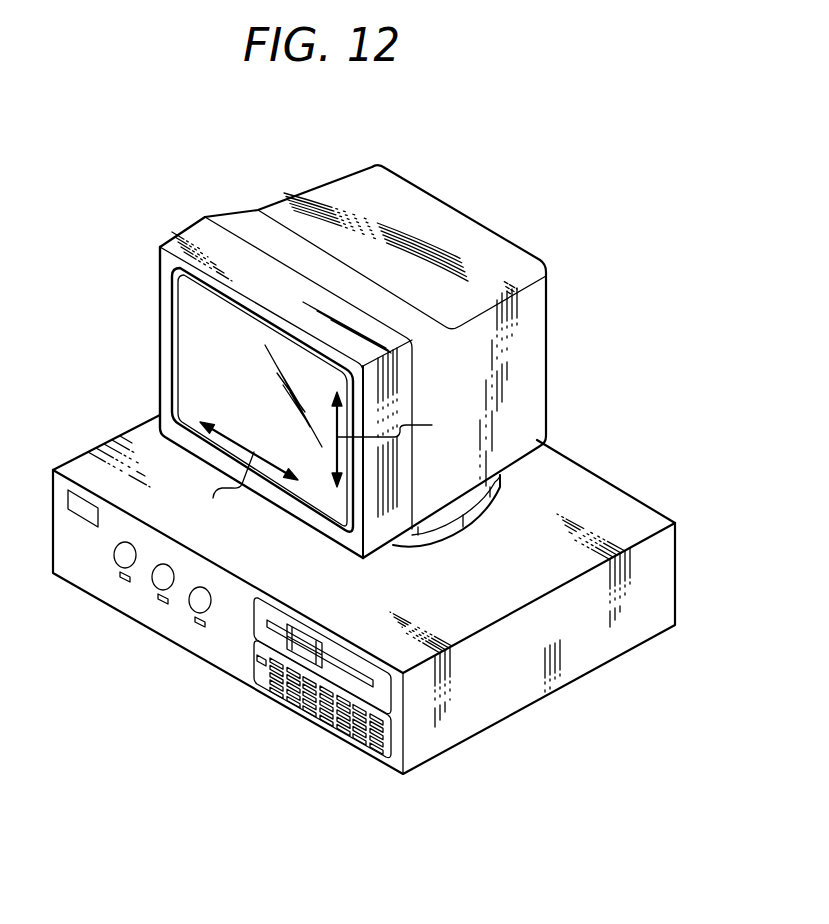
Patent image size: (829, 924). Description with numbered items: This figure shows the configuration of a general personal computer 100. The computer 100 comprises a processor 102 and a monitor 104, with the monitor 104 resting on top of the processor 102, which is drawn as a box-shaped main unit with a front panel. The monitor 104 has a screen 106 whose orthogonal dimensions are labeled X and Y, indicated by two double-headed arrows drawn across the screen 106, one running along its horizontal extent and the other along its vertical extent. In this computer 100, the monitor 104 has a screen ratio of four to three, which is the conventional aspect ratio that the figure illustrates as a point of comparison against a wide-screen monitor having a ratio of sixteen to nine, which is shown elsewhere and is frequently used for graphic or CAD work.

The computer 100 is at (552, 175).
The processor 102 is at (587, 662).
The monitor 104 is at (545, 393).
The screen 106 is at (190, 363).